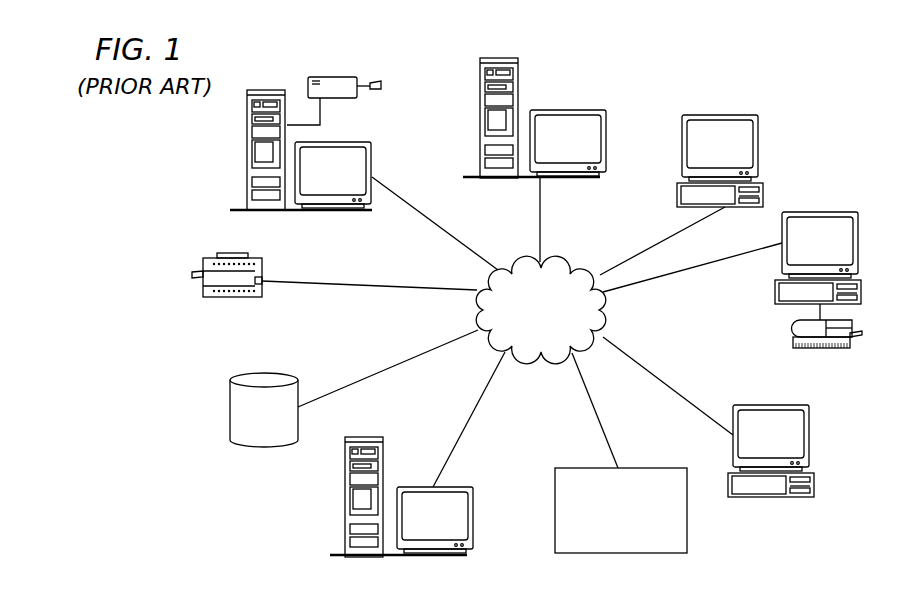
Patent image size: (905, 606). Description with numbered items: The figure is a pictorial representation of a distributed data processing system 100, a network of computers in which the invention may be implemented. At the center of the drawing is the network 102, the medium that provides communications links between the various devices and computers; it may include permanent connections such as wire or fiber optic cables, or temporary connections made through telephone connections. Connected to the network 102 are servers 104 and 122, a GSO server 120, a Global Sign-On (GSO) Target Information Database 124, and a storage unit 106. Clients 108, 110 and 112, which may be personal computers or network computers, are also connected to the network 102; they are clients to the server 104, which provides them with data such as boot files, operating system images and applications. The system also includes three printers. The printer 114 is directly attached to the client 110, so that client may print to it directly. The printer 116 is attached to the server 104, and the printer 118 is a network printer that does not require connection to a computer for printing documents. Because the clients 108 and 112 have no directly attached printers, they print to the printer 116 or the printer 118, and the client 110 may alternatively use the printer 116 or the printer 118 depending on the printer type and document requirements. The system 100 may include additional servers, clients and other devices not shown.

The distributed data processing system 100 is at (826, 121).
The network 102 is at (525, 319).
The server 104 is at (316, 183).
The storage unit 106 is at (247, 423).
The client 108 is at (702, 155).
The client 110 is at (803, 251).
The client 112 is at (755, 447).
The printer 114 is at (823, 349).
The printer 116 is at (337, 77).
The printer 118 is at (233, 297).
The GSO server 120 is at (418, 527).
The server 122 is at (550, 150).
The Global Sign-On (GSO) Target Information Database 124 is at (687, 512).